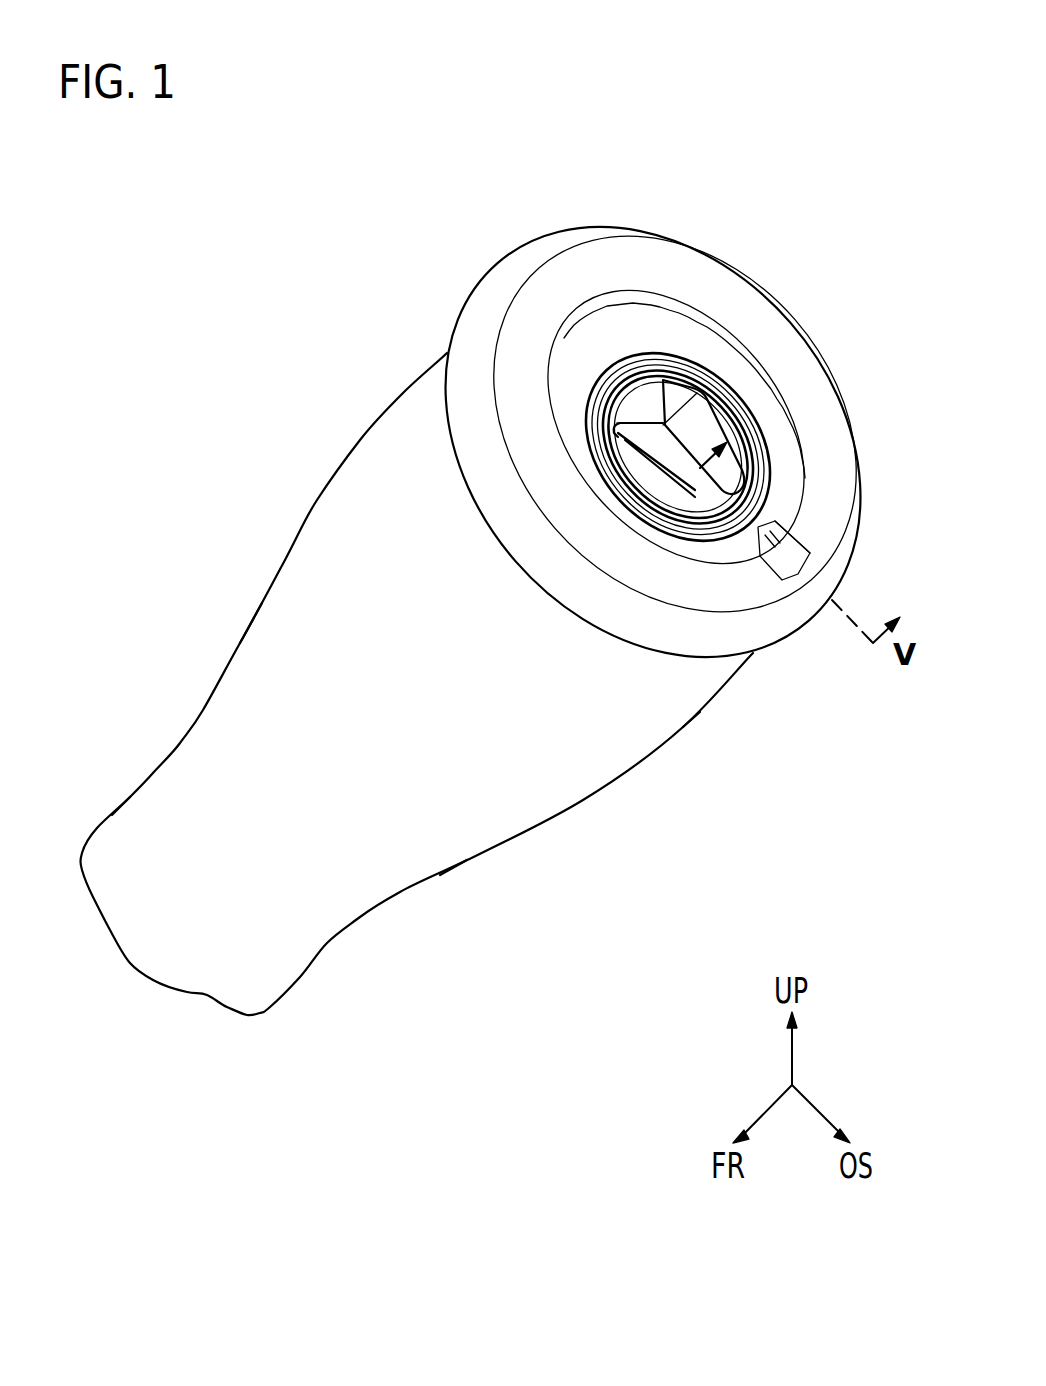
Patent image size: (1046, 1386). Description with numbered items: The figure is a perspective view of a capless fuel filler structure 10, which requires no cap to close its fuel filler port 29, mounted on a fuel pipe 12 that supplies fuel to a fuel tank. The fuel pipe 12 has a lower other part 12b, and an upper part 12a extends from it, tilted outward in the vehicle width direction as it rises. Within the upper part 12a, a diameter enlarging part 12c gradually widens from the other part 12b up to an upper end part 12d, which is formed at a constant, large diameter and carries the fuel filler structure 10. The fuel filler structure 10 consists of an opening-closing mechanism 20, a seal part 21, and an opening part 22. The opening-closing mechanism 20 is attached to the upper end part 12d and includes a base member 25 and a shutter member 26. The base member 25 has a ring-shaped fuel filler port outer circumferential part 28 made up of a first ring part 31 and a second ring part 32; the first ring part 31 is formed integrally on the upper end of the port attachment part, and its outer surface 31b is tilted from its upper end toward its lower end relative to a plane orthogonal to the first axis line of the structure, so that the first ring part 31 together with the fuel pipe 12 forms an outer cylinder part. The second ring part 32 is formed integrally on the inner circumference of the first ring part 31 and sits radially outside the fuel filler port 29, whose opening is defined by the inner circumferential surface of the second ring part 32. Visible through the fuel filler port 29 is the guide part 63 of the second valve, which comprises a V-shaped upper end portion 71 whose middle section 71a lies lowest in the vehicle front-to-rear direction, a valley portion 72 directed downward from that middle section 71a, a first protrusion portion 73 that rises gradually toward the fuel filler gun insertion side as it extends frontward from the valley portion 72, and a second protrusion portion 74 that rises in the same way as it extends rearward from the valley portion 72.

The fuel filler structure 10 is at (410, 205).
The fuel pipe 12 is at (279, 523).
The upper part 12a is at (230, 630).
The other part 12b is at (130, 797).
The diameter enlarging part 12c is at (470, 860).
The upper end part 12d is at (680, 730).
The opening-closing mechanism 20 is at (647, 425).
The seal part 21 is at (777, 540).
The opening part 22 is at (793, 567).
The base member 25 is at (698, 245).
The shutter member 26 is at (738, 386).
The fuel filler port outer circumferential part 28 is at (728, 272).
The fuel filler port 29 is at (748, 496).
The first ring part 31 is at (575, 262).
The outer surface 31b is at (805, 383).
The second ring part 32 is at (583, 355).
The guide part 63 is at (758, 452).
The upper end portion 71 is at (638, 425).
The middle section 71a is at (663, 423).
The valley portion 72 is at (763, 488).
The first protrusion portion 73 is at (672, 450).
The second protrusion portion 74 is at (768, 432).